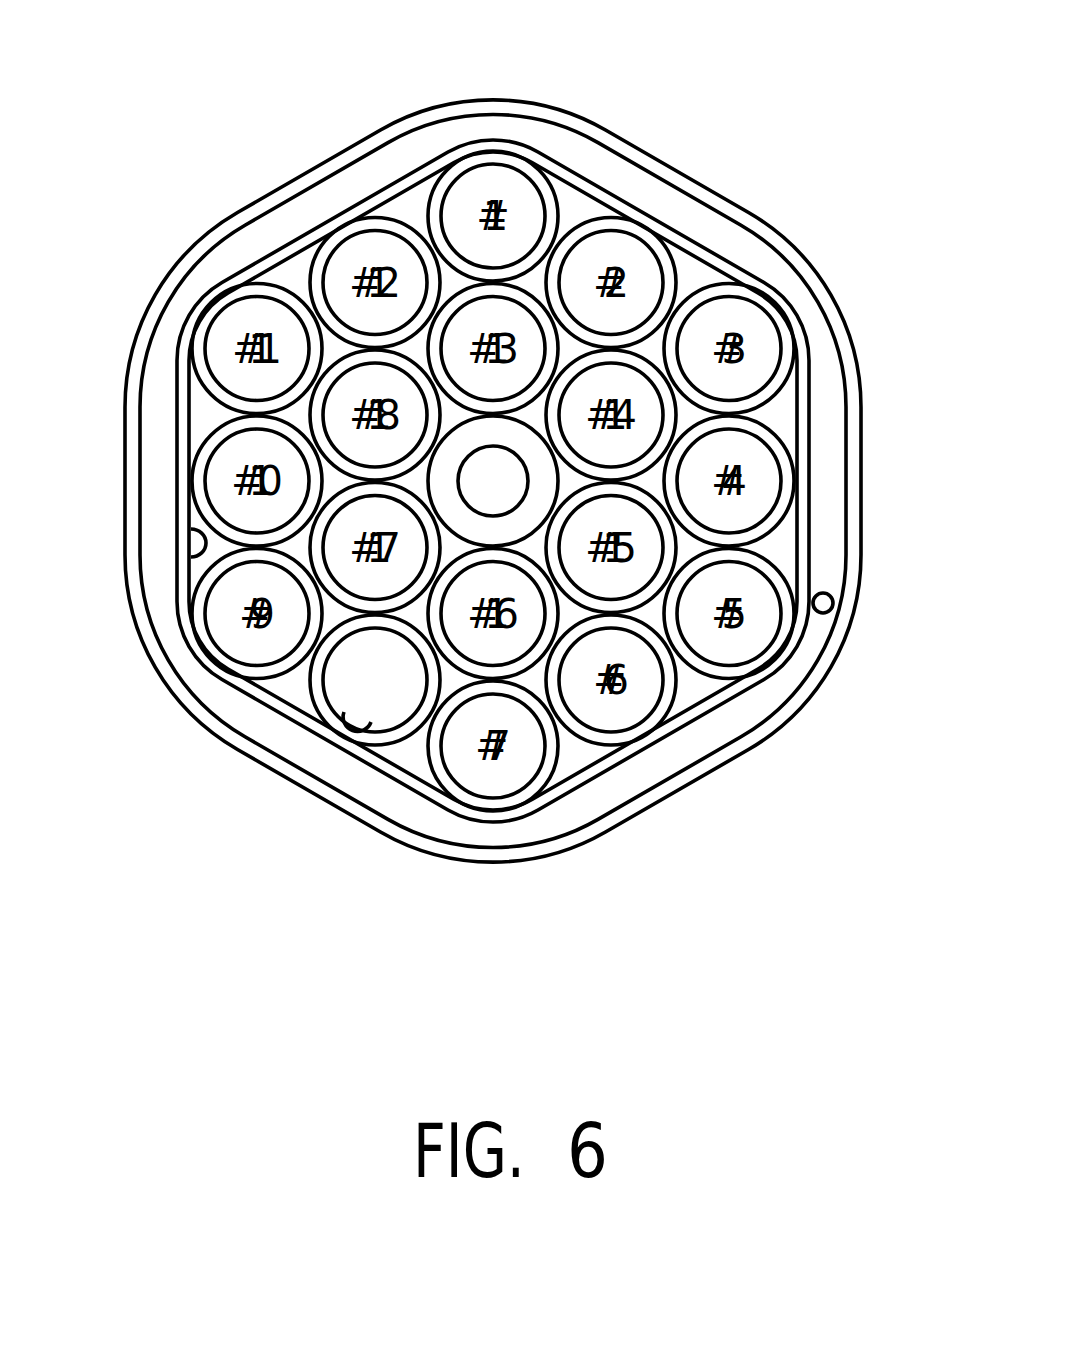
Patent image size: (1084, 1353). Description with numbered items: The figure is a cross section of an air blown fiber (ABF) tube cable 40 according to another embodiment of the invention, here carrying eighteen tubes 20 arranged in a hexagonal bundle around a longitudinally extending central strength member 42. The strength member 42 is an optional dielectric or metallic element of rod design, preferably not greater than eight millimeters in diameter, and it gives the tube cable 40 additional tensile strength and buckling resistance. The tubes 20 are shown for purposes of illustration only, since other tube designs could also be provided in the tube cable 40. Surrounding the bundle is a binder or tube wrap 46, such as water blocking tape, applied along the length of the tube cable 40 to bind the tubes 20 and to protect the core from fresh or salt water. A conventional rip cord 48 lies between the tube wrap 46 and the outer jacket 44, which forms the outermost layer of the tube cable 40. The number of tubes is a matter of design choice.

The tube 20 is at (346, 714).
The air blown fiber tube cable 40 is at (806, 87).
The strength member 42 is at (510, 470).
The outer jacket 44 is at (630, 815).
The binder or tube wrap 46 is at (200, 562).
The rip cord 48 is at (833, 606).